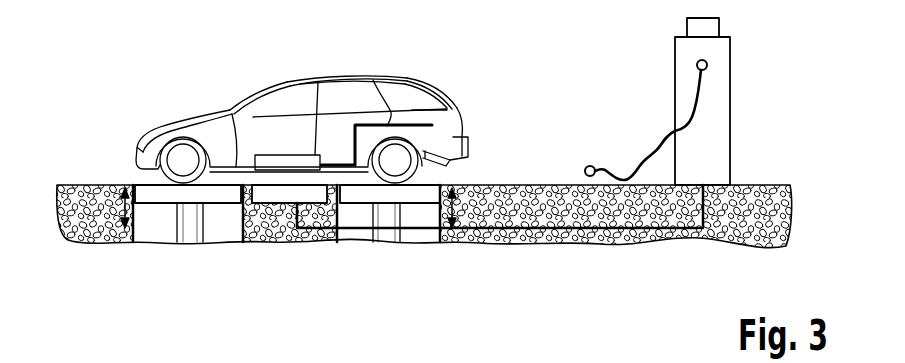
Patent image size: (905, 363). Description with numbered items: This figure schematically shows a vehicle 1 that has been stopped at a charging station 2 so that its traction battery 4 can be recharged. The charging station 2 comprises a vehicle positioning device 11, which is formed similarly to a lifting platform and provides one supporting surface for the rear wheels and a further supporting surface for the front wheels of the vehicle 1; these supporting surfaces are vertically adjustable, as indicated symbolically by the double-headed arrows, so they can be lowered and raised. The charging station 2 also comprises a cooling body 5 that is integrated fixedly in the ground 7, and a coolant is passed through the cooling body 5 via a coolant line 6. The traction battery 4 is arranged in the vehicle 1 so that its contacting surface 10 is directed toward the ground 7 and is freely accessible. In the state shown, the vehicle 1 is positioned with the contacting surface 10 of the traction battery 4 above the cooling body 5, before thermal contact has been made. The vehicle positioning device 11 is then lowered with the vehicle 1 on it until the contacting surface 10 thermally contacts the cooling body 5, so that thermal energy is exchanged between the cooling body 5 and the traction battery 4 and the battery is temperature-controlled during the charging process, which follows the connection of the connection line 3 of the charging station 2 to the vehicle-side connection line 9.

The vehicle 1 is at (302, 102).
The charging station 2 is at (731, 100).
The connection line 3 is at (651, 155).
The traction battery 4 is at (277, 154).
The cooling body 5 is at (287, 194).
The coolant line 6 is at (657, 231).
The ground 7 is at (89, 183).
The vehicle-side connection line 9 is at (413, 124).
The contacting surface 10 is at (285, 174).
The vehicle positioning device 11 is at (153, 257).